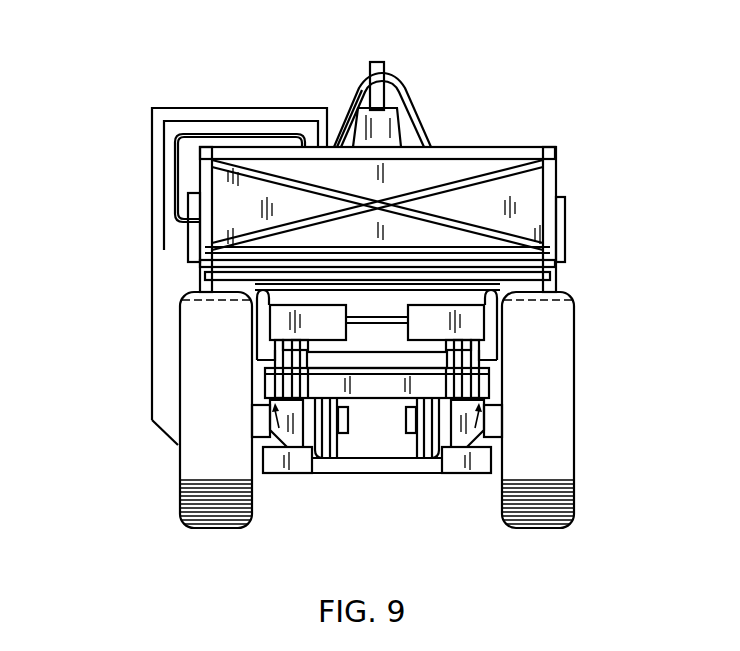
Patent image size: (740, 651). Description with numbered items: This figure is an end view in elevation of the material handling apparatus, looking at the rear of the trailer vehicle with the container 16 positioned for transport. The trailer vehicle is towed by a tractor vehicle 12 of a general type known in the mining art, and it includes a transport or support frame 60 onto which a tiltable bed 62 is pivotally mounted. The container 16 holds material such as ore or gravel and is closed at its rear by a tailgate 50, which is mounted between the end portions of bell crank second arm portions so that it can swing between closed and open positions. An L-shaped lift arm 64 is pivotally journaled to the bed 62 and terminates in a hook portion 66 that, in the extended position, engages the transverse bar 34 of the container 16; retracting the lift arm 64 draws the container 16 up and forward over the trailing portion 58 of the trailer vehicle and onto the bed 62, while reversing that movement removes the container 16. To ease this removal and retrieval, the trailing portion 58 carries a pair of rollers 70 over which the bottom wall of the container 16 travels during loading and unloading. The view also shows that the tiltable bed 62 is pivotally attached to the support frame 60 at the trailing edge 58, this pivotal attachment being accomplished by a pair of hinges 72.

The tractor vehicle 12 is at (127, 169).
The container 16 is at (519, 113).
The transverse bar 34 is at (412, 115).
The tailgate 50 is at (404, 96).
The trailing portion 58 is at (352, 473).
The support frame 60 is at (369, 386).
The tiltable bed 62 is at (262, 362).
The lift arm 64 is at (356, 98).
The hook portion 66 is at (381, 70).
The rollers 70 is at (288, 322).
The hinges 72 is at (262, 445).